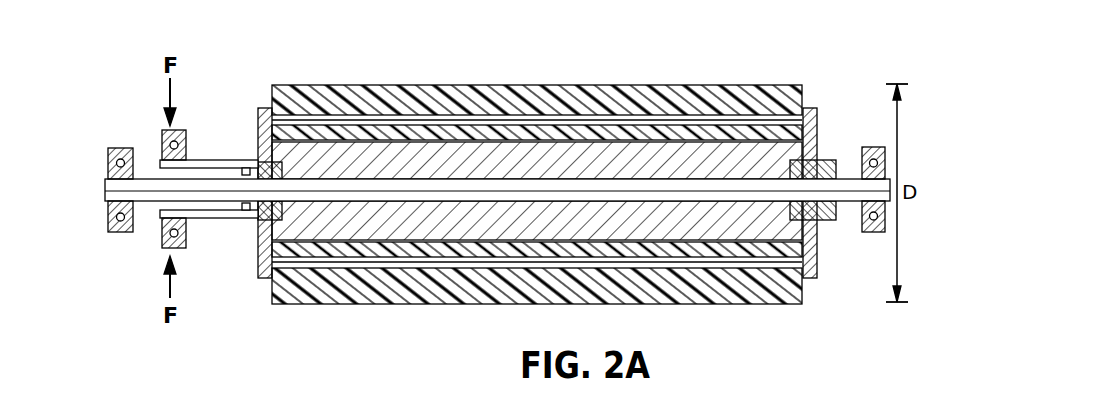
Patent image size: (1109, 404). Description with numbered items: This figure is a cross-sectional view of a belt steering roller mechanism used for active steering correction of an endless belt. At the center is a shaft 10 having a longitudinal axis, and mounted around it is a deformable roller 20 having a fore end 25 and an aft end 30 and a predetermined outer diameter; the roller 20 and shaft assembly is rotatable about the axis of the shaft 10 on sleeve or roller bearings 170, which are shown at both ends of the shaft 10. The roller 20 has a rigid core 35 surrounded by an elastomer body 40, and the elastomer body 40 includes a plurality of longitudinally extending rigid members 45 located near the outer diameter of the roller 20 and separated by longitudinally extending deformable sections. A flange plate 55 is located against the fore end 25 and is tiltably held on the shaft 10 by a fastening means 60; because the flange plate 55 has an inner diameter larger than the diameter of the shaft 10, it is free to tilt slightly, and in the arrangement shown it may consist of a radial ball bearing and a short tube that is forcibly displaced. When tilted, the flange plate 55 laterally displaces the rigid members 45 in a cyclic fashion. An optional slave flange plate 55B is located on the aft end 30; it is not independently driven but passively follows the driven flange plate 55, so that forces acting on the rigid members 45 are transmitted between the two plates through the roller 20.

The deformable roller 20 is at (552, 76).
The elastomer body 40 is at (426, 86).
The longitudinally extending rigid members 45 is at (334, 110).
The fore end 25 is at (270, 104).
The aft end 30 is at (809, 106).
The flange plate 55 is at (258, 250).
The slave flange plate 55B is at (818, 110).
The shaft 10 is at (840, 178).
The sleeve or roller bearings 170 is at (112, 148).
The fastening means 60 is at (240, 161).
The rigid core 35 is at (258, 256).